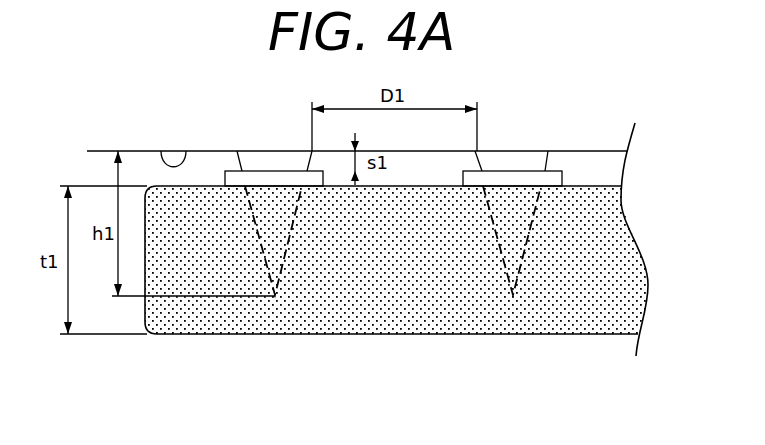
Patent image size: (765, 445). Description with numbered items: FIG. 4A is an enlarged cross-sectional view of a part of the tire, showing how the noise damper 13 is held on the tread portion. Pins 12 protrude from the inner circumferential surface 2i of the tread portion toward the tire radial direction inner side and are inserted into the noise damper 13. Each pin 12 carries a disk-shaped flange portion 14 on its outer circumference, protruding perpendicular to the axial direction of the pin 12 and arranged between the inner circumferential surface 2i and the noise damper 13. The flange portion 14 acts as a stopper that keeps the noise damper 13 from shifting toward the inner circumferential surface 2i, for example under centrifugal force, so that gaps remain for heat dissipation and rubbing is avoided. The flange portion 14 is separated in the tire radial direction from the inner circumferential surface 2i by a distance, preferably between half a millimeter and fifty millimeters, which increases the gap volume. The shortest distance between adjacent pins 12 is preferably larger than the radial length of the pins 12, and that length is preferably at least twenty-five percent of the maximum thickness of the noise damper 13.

The inner circumferential surface 2i is at (163, 152).
The pin 12 is at (285, 250).
The noise damper 13 is at (403, 303).
The flange portion 14 is at (273, 178).